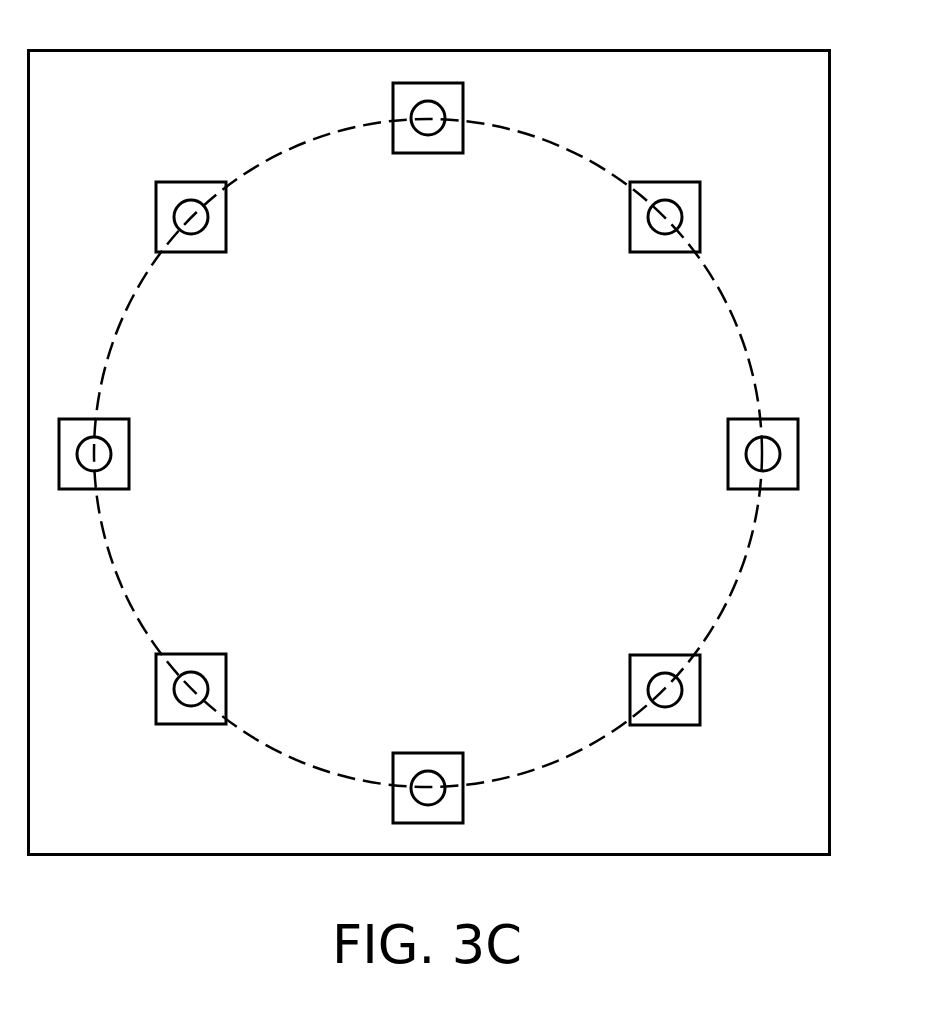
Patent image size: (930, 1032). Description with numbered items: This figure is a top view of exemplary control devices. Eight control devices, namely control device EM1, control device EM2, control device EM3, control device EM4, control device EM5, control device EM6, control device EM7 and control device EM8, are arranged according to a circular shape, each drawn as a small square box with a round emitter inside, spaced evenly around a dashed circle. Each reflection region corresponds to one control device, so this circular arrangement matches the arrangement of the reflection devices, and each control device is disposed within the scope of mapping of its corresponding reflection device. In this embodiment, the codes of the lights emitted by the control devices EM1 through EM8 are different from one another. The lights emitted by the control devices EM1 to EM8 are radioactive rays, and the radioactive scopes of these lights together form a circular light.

The control device EM1 is at (630, 215).
The control device EM2 is at (728, 455).
The control device EM3 is at (630, 692).
The control device EM4 is at (425, 752).
The control device EM5 is at (226, 690).
The control device EM6 is at (129, 450).
The control device EM7 is at (226, 215).
The control device EM8 is at (432, 153).